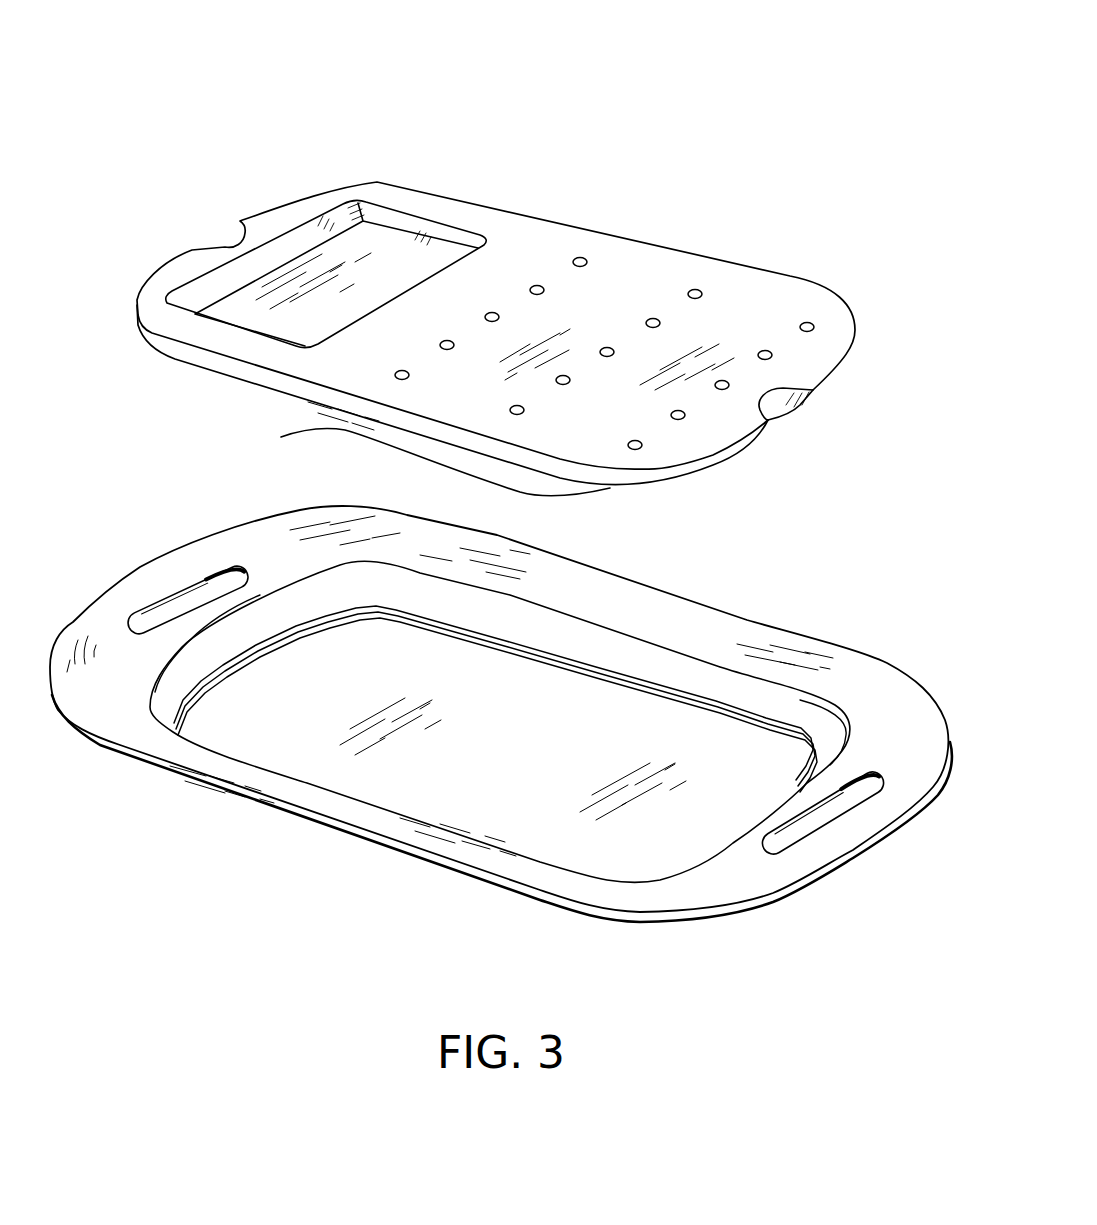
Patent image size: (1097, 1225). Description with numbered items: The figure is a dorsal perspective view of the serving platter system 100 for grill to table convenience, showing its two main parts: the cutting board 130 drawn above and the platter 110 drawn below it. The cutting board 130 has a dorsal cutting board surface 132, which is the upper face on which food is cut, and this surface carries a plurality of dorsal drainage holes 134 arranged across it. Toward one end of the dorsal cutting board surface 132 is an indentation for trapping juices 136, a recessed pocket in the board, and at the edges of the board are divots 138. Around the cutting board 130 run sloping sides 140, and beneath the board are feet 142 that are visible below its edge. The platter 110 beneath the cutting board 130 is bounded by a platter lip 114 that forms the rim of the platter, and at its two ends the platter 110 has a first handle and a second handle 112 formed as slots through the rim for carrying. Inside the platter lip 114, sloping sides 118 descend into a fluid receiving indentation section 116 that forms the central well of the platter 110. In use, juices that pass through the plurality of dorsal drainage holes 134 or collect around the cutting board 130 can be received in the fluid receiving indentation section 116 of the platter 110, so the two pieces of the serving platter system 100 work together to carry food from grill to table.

The serving platter system 100 is at (838, 106).
The platter 110 is at (766, 613).
The first handle and second handle 112 is at (173, 603).
The platter lip 114 is at (253, 548).
The fluid receiving indentation section 116 is at (500, 682).
The sloping sides 118 is at (663, 682).
The cutting board 130 is at (778, 277).
The dorsal cutting board surface 132 is at (667, 282).
The plurality of dorsal drainage holes 134 is at (609, 347).
The indentation for trapping juices 136 is at (383, 244).
The divots 138 is at (234, 247).
The sloping sides 140 is at (183, 353).
The feet 142 is at (233, 382).